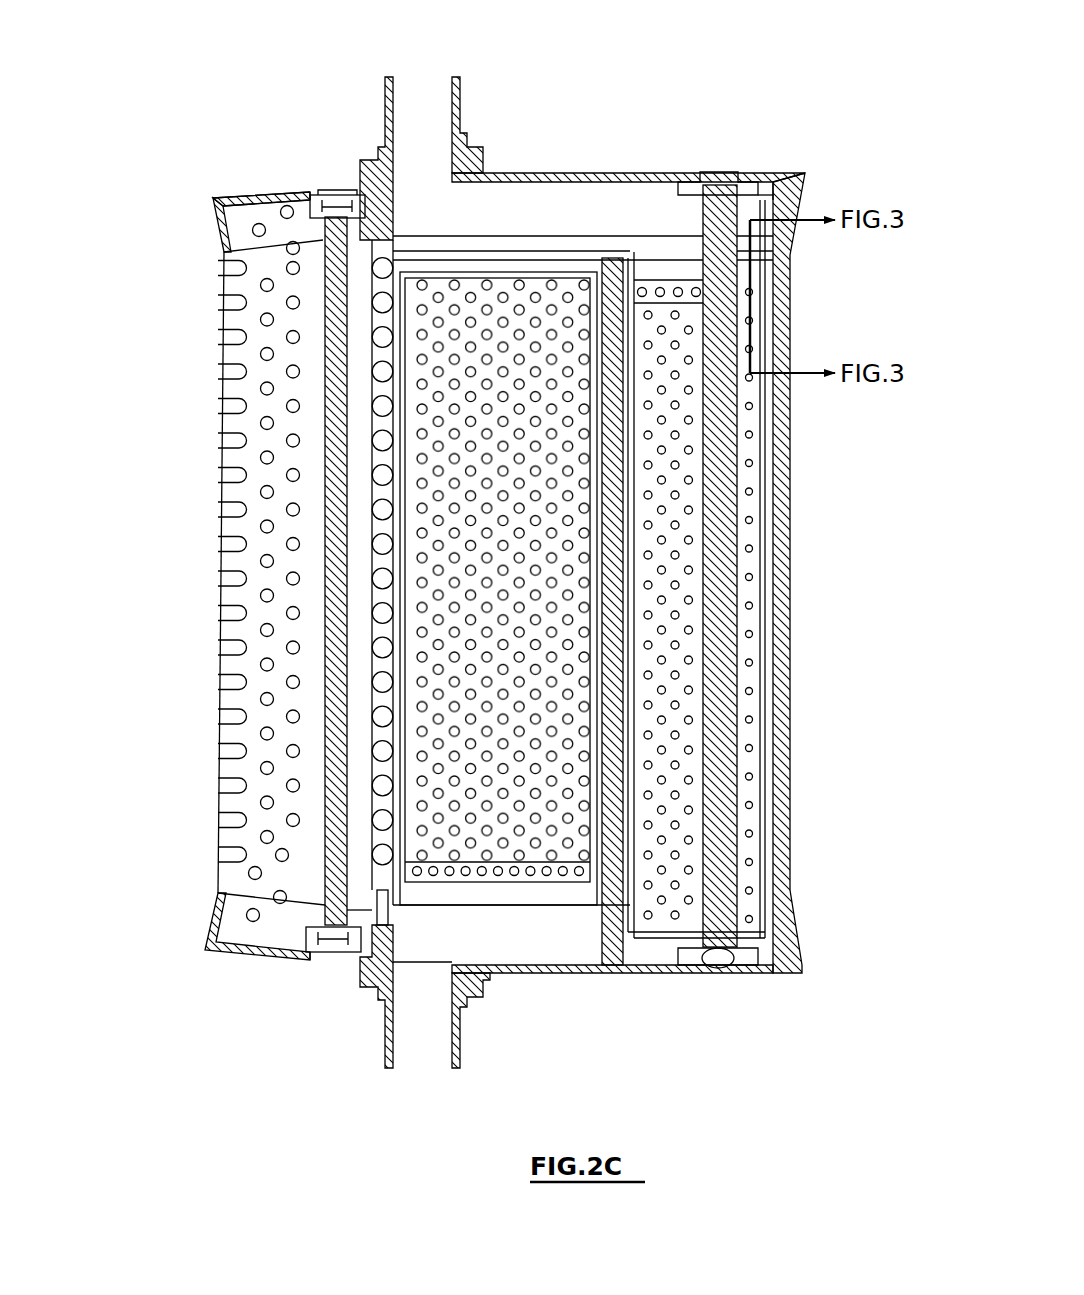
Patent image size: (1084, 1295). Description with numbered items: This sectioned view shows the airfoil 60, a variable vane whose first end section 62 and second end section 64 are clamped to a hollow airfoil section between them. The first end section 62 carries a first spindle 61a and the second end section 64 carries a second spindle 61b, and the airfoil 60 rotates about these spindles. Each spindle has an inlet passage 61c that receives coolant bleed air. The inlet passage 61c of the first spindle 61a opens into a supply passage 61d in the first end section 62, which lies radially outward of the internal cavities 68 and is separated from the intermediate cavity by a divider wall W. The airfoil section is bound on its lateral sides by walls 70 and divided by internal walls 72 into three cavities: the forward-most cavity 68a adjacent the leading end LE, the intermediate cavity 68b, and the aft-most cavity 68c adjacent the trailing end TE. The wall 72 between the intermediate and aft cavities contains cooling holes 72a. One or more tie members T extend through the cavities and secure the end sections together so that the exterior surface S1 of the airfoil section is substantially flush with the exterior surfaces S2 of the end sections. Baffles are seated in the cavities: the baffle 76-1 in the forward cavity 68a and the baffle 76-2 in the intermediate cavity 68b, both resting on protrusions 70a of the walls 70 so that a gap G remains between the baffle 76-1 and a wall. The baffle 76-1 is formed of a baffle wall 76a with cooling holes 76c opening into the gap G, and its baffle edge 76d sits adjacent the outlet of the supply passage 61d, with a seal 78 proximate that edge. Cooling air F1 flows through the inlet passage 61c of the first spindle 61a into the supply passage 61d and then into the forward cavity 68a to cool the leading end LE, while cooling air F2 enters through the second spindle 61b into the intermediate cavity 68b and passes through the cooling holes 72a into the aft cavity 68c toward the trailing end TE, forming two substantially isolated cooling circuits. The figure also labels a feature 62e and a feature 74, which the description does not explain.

The airfoil 60 is at (130, 840).
The first spindle 61a is at (466, 93).
The second spindle 61b is at (381, 1048).
The inlet passage 61c is at (399, 77).
The supply passage 61d is at (530, 210).
The first end section 62 is at (790, 201).
The housing wall end portion 62e is at (758, 248).
The second end section 64 is at (792, 959).
The internal cavities 68 is at (428, 893).
The forward-most cavity 68a is at (667, 285).
The intermediate cavity 68b is at (553, 287).
The aft-most cavity 68c is at (280, 357).
The walls 70 is at (782, 532).
The protrusions 70a is at (767, 632).
The internal walls 72 is at (390, 665).
The cooling holes 72a is at (385, 598).
The bolt 74 is at (375, 222).
The baffle 76-1 is at (705, 348).
The baffle 76-2 is at (442, 351).
The baffle wall 76a is at (680, 607).
The cooling holes 76c is at (690, 417).
The baffle edge 76d is at (760, 271).
The seal 78 is at (775, 279).
The cooling air F1 is at (445, 213).
The cooling air F2 is at (423, 1022).
The divider wall W is at (443, 250).
The gap G is at (768, 428).
The tie member T is at (338, 500).
The trailing end TE is at (428, 772).
The leading end LE is at (792, 731).
The exterior surface S1 is at (788, 852).
The exterior surfaces S2 is at (796, 189).